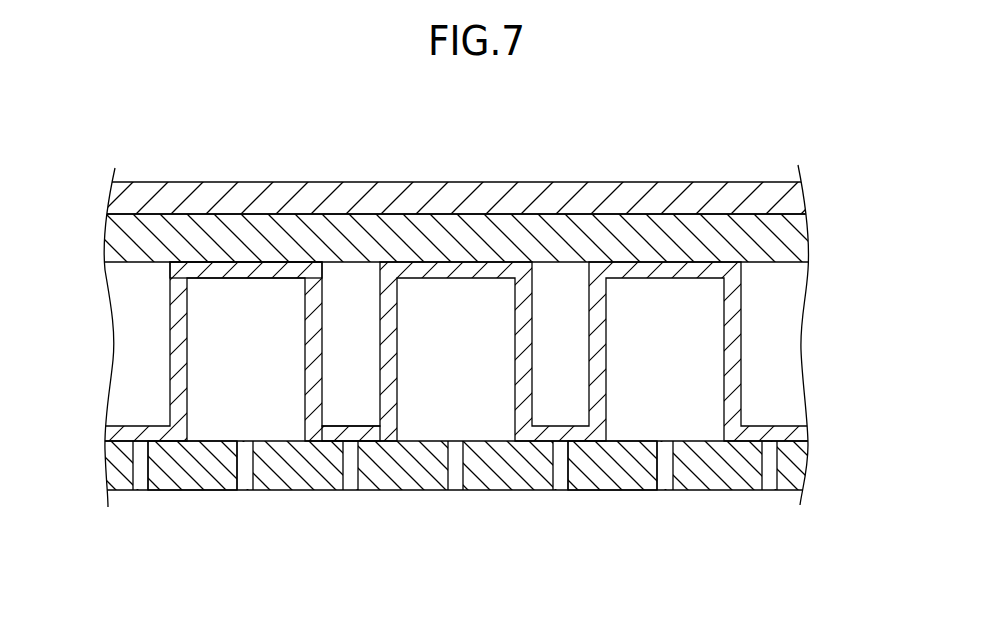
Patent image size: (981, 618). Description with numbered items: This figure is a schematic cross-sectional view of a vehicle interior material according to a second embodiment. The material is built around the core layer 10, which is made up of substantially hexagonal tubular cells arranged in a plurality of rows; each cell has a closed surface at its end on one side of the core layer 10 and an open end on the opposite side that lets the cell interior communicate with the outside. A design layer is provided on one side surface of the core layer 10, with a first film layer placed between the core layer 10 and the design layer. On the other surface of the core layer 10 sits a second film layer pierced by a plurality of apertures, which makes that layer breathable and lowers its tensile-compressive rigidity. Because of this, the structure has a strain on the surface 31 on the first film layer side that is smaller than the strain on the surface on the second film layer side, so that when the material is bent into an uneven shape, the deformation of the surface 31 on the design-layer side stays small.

The core layer 10 is at (806, 352).
The surface on the first film layer side 31 is at (130, 213).